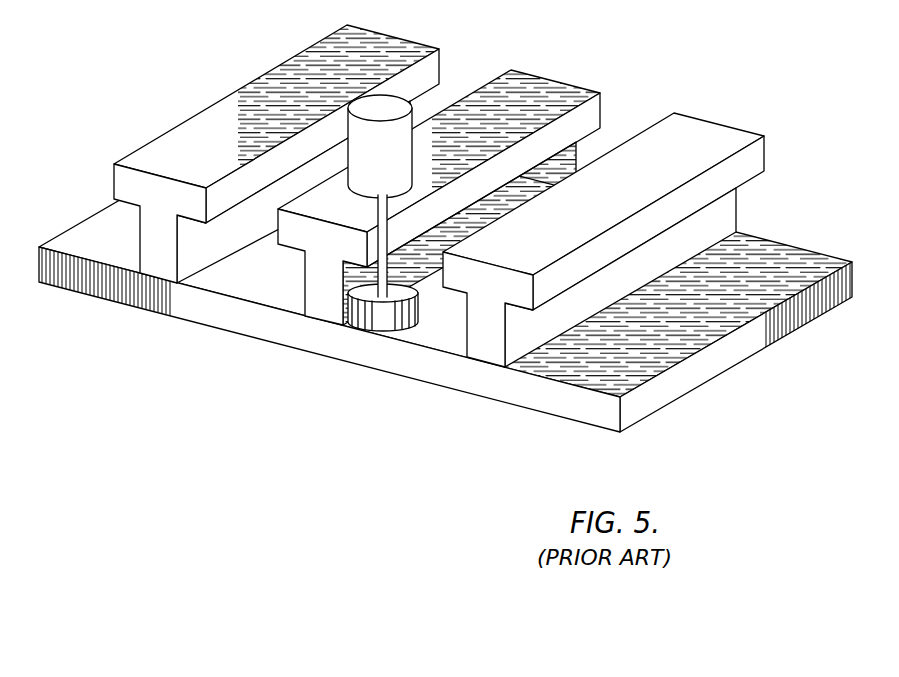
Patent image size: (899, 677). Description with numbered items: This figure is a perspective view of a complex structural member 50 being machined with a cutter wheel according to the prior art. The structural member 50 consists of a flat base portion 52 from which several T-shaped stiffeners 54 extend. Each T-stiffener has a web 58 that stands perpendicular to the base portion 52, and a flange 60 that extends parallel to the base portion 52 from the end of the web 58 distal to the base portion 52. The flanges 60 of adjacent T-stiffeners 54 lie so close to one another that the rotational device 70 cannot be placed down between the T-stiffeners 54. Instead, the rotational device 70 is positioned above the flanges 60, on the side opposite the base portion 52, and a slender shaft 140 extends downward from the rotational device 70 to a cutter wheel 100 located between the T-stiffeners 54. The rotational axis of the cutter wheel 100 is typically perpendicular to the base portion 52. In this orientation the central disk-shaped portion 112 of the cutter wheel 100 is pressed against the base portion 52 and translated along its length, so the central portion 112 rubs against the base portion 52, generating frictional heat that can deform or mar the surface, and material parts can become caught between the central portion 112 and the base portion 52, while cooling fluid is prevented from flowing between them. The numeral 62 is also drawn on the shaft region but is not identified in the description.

The structural member 50 is at (96, 293).
The base portion 52 is at (373, 362).
The T-shaped stiffeners 54 is at (567, 81).
The webs 58 is at (303, 283).
The flanges 60 is at (280, 231).
The shaft 62 is at (389, 265).
The rotational device 70 is at (345, 143).
The cutter wheel 100 is at (395, 323).
The central disk-shaped portion 112 is at (363, 337).
The shaft 140 is at (418, 280).